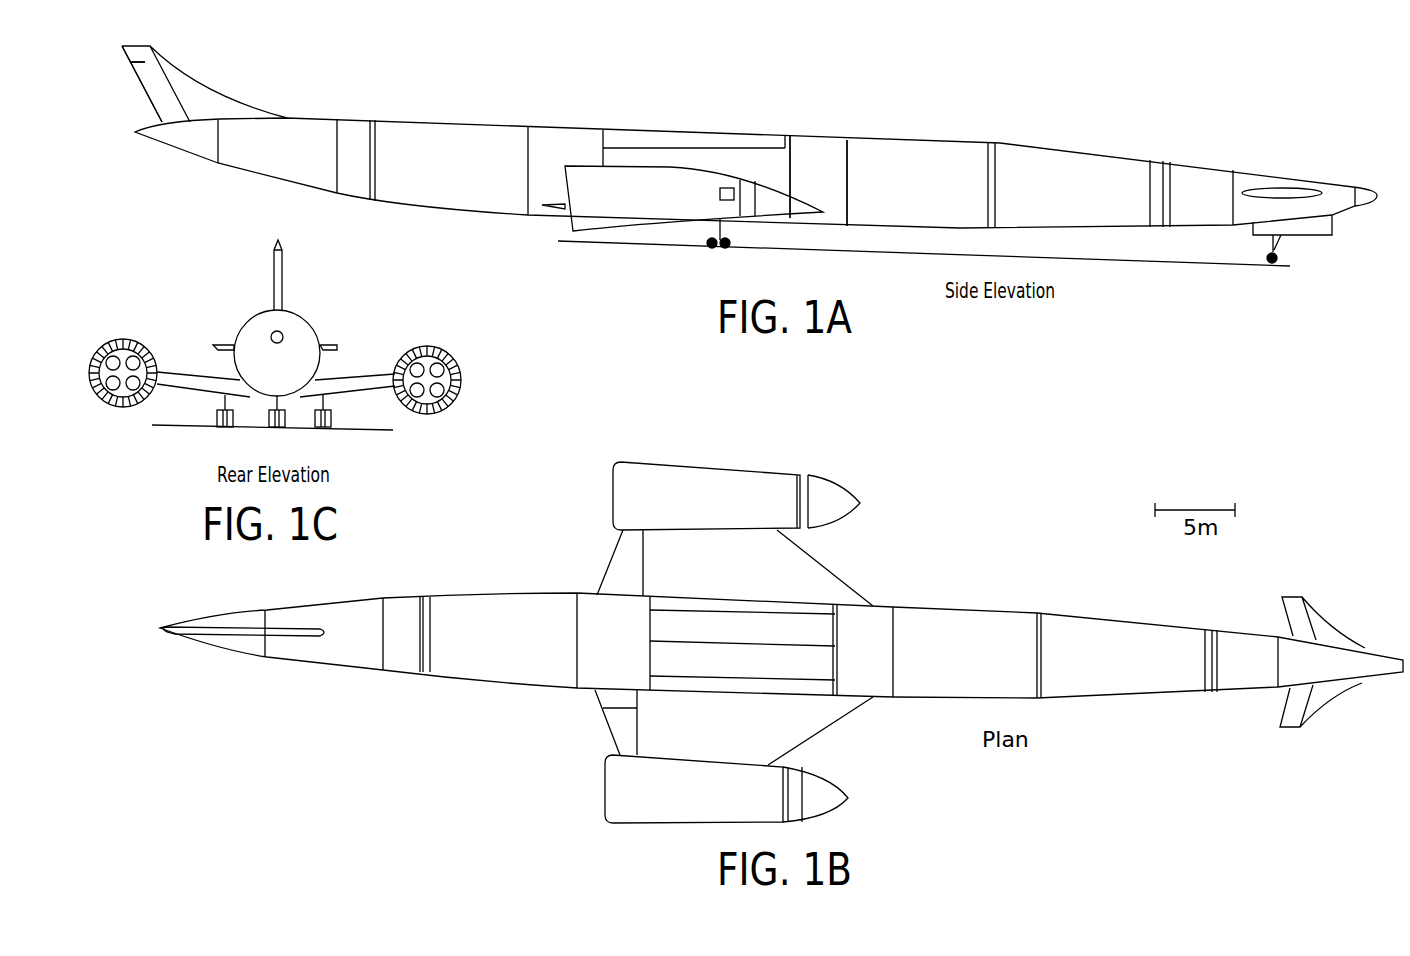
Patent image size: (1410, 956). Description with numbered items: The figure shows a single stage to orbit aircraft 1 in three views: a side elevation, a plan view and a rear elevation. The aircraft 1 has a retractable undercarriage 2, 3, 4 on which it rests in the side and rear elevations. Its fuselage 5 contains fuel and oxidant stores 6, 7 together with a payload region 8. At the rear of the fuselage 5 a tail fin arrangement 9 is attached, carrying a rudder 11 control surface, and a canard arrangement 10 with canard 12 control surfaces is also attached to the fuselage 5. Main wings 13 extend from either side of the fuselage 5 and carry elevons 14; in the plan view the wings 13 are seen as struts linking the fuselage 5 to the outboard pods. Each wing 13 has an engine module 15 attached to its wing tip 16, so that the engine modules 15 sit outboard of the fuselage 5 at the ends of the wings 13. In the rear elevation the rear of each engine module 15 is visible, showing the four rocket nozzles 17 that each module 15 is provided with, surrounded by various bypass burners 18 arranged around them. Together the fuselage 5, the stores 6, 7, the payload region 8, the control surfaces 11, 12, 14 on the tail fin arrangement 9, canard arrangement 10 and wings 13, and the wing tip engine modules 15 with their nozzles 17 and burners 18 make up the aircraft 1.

In FIG. 1A, the single stage to orbit aircraft 1 is at (912, 156).
In FIG. 1A, the retractable undercarriage 2 is at (1280, 260).
In FIG. 1C, the retractable undercarriage 2 is at (265, 422).
In FIG. 1A, the retractable undercarriage 3 is at (703, 249).
In FIG. 1C, the retractable undercarriage 3 is at (335, 421).
In FIG. 1C, the retractable undercarriage 4 is at (215, 418).
In FIG. 1A, the fuselage 5 is at (818, 150).
In FIG. 1B, the fuselage 5 is at (930, 622).
In FIG. 1A, the fuel and oxidant store 6 is at (505, 105).
In FIG. 1A, the fuel and oxidant store 7 is at (1050, 136).
In FIG. 1A, the payload region 8 is at (720, 140).
In FIG. 1A, the tail fin arrangement 9 is at (188, 88).
In FIG. 1B, the canard arrangement 10 is at (1322, 700).
In FIG. 1A, the rudder 11 is at (155, 97).
In FIG. 1C, the rudder 11 is at (282, 287).
In FIG. 1B, the canard 12 is at (1295, 620).
In FIG. 1C, the canard 12 is at (213, 346).
In FIG. 1B, the main wing 13 is at (818, 576).
In FIG. 1C, the main wing 13 is at (357, 383).
In FIG. 1B, the elevon 14 is at (613, 553).
In FIG. 1B, the engine module 15 is at (778, 490).
In FIG. 1C, the engine module 15 is at (445, 362).
In FIG. 1B, the wing tip 16 is at (695, 540).
In FIG. 1C, the rocket nozzle 17 is at (420, 402).
In FIG. 1C, the bypass burner 18 is at (445, 397).